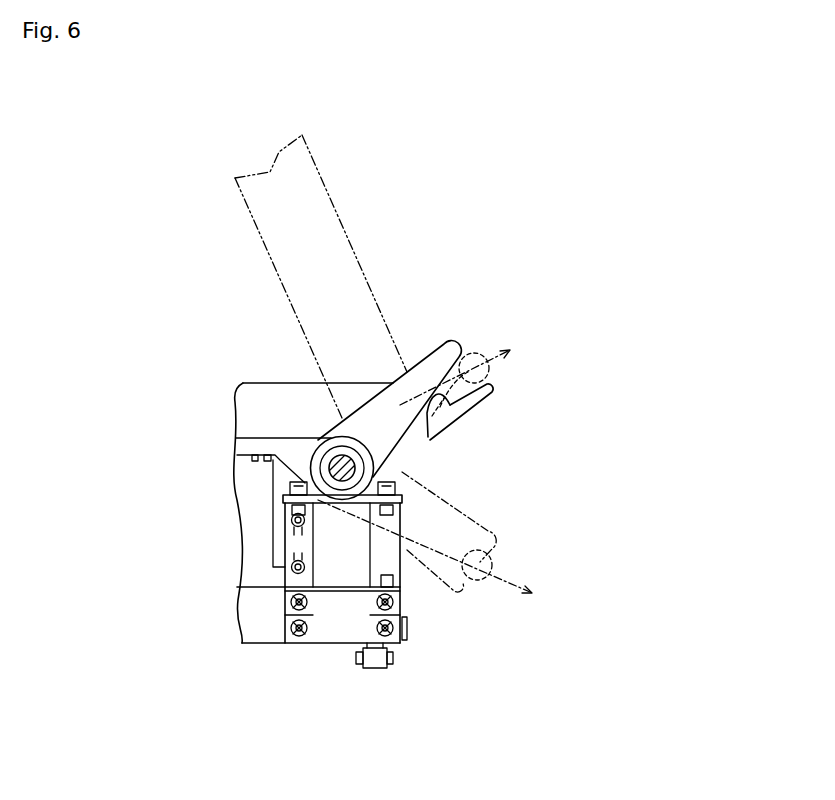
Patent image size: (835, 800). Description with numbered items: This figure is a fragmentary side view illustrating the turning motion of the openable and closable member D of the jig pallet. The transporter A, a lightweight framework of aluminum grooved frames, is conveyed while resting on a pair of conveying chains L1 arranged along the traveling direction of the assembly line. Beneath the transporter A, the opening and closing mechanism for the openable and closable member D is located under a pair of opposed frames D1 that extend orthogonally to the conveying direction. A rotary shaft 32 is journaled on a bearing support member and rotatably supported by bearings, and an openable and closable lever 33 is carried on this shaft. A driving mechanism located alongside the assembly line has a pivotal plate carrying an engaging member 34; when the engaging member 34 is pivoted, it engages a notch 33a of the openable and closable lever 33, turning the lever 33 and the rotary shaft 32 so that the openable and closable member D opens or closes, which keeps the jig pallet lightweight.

The openable and closable member D is at (232, 375).
The opposed frames D1 is at (317, 235).
The rotary shaft 32 is at (330, 471).
The openable and closable lever 33 is at (438, 350).
The notch 33a is at (428, 418).
The engaging member 34 is at (515, 358).
The transporter A is at (440, 623).
The conveying chains L1 is at (383, 668).